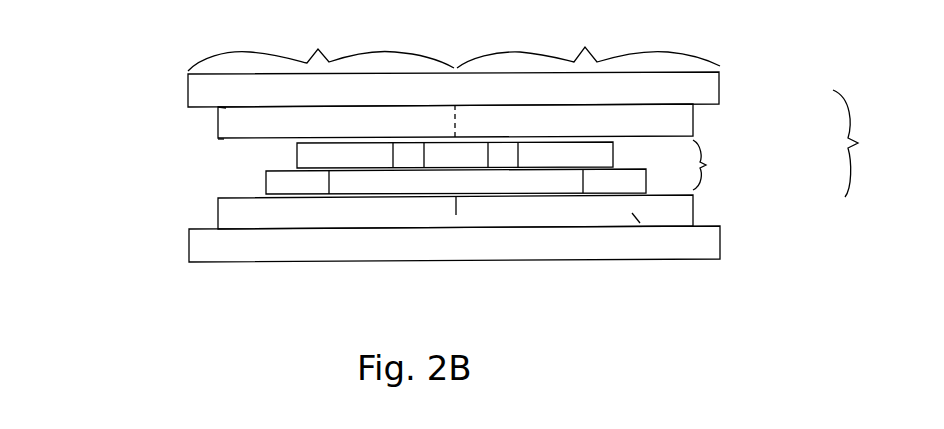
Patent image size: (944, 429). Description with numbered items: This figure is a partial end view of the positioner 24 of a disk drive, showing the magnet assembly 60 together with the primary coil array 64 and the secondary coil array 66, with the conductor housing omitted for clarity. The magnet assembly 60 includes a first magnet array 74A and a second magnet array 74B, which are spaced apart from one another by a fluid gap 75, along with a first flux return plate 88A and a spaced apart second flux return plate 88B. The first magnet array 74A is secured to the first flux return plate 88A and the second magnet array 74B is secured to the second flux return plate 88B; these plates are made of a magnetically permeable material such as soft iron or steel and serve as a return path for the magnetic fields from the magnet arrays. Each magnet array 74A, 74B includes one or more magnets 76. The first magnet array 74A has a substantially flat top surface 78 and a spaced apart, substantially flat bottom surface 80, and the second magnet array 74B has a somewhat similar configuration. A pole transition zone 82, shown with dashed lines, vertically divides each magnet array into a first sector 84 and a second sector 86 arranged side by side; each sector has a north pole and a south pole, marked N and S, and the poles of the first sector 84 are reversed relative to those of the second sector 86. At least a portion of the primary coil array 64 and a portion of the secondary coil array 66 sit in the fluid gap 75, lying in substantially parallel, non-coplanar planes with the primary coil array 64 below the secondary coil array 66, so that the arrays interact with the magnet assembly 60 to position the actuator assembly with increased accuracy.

The positioner 24 is at (128, 107).
The magnet assembly 60 is at (864, 143).
The primary coil array 64 is at (277, 183).
The secondary coil array 66 is at (310, 156).
The first magnet array 74A is at (709, 120).
The second magnet array 74B is at (714, 207).
The fluid gap 75 is at (720, 165).
The magnet 76 is at (632, 213).
The top surface 78 is at (226, 108).
The bottom surface 80 is at (222, 140).
The pole transition zone 82 is at (456, 216).
The first sector 84 is at (321, 46).
The second sector 86 is at (588, 42).
The first flux return plate 88A is at (710, 85).
The second flux return plate 88B is at (705, 243).